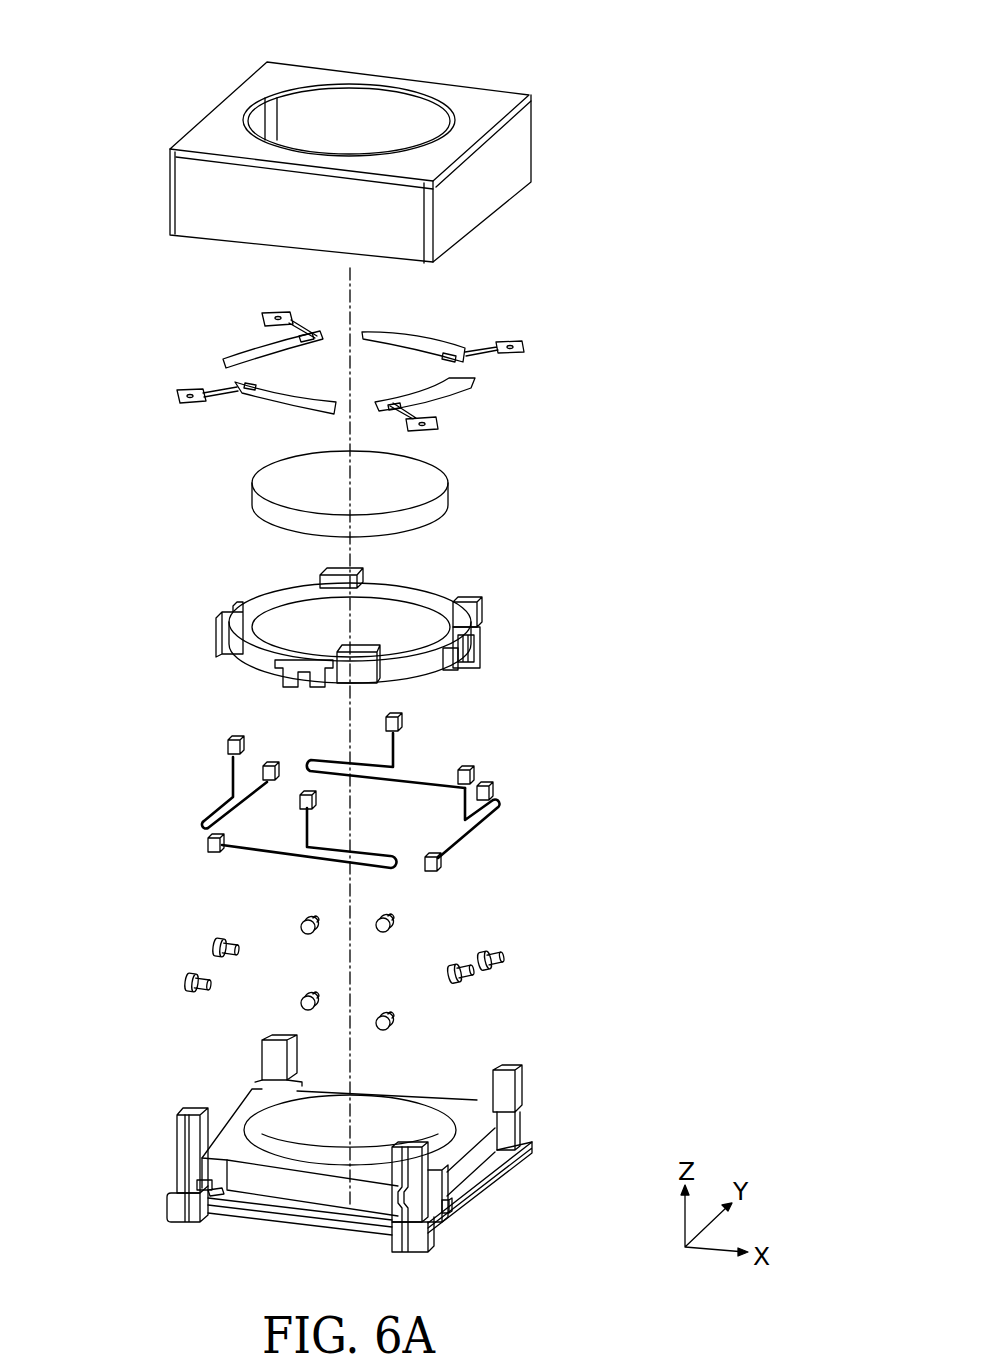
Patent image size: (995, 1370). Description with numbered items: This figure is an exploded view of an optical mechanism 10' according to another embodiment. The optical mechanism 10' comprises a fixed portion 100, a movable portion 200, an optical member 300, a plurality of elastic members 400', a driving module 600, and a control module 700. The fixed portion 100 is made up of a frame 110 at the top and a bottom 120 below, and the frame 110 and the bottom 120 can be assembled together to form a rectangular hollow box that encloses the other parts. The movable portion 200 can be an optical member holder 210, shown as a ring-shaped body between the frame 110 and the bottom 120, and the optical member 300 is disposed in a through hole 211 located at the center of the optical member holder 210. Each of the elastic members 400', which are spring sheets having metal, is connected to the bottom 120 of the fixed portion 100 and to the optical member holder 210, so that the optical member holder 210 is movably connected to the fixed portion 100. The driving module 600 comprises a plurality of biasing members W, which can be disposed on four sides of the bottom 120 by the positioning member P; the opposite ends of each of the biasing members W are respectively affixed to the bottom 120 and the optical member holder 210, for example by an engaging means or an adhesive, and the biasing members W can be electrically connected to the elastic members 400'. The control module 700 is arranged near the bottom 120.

The optical mechanism 10' is at (82, 13).
The fixed portion 100 is at (658, 258).
The frame 110 is at (203, 128).
The bottom 120 is at (252, 1110).
The elastic members 400' is at (287, 371).
The optical member 300 is at (276, 482).
The movable portion 200 is at (488, 621).
The optical member holder 210 is at (263, 600).
The through hole 211 is at (410, 612).
The driving module 600 is at (512, 790).
The biasing members W is at (237, 847).
The positioning member P is at (203, 978).
The control module 700 is at (448, 1210).